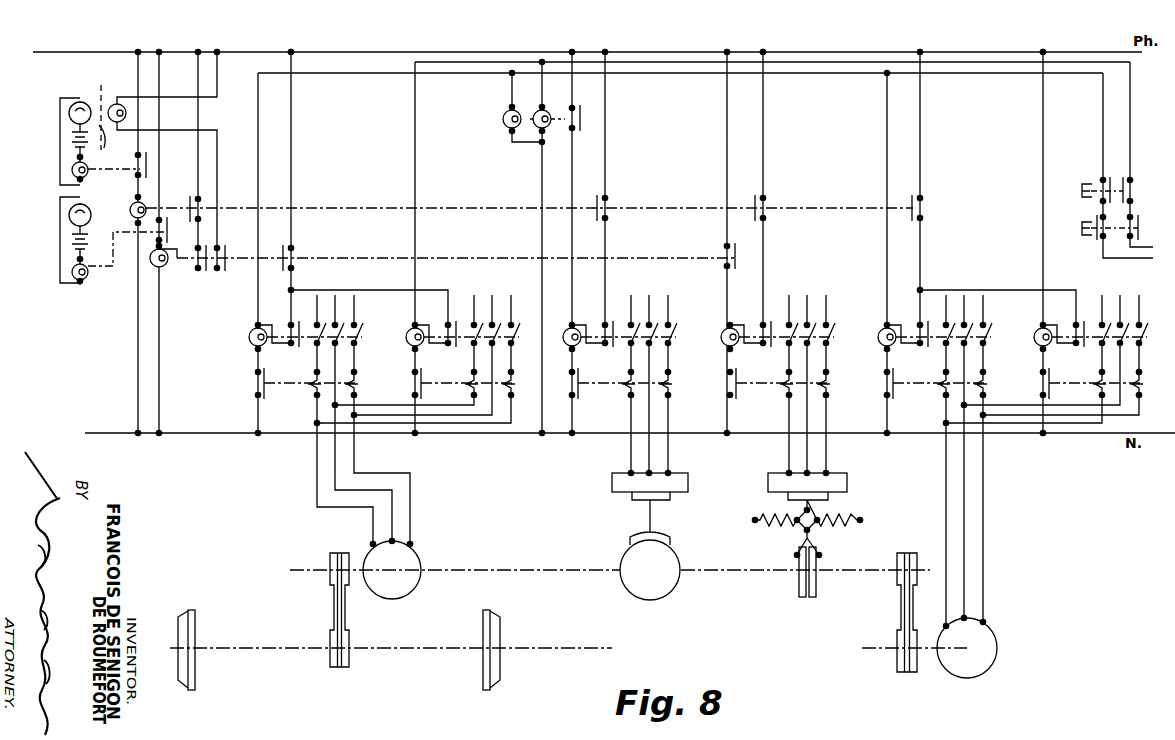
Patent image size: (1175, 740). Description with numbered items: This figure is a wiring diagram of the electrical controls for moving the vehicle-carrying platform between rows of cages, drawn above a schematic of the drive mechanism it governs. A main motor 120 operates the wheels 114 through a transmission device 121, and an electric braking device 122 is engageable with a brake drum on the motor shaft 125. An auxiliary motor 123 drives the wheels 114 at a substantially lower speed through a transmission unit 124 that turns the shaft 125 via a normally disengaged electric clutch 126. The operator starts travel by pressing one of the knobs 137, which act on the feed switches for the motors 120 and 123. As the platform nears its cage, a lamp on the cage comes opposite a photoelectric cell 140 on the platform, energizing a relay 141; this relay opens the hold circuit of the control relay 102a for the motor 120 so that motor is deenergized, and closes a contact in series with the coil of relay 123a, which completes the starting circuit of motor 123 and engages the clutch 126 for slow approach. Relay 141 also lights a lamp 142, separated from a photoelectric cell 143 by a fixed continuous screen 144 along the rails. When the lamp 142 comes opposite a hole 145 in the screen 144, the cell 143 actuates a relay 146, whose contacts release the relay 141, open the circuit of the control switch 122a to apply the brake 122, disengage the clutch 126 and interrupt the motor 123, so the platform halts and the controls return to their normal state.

The photoelectric cell 143 is at (72, 102).
The fixed continuous screen 144 is at (102, 98).
The holes 145 is at (119, 138).
The lamp 142 is at (127, 112).
The photoelectric cell 140 is at (68, 221).
The relay 146 is at (133, 207).
The relay 141 is at (150, 263).
The knobs 137 is at (1084, 212).
The contactor 102a is at (256, 326).
The control switch 122a is at (571, 327).
The relay 123a is at (727, 326).
The main motor 120 is at (420, 562).
The motor shaft 125 is at (527, 568).
The electric braking device 122 is at (690, 486).
The electric clutch 126 is at (847, 486).
The wheels 114 is at (195, 614).
The transmission device 121 is at (331, 611).
The transmission unit 124 is at (900, 590).
The auxiliary motor 123 is at (996, 641).